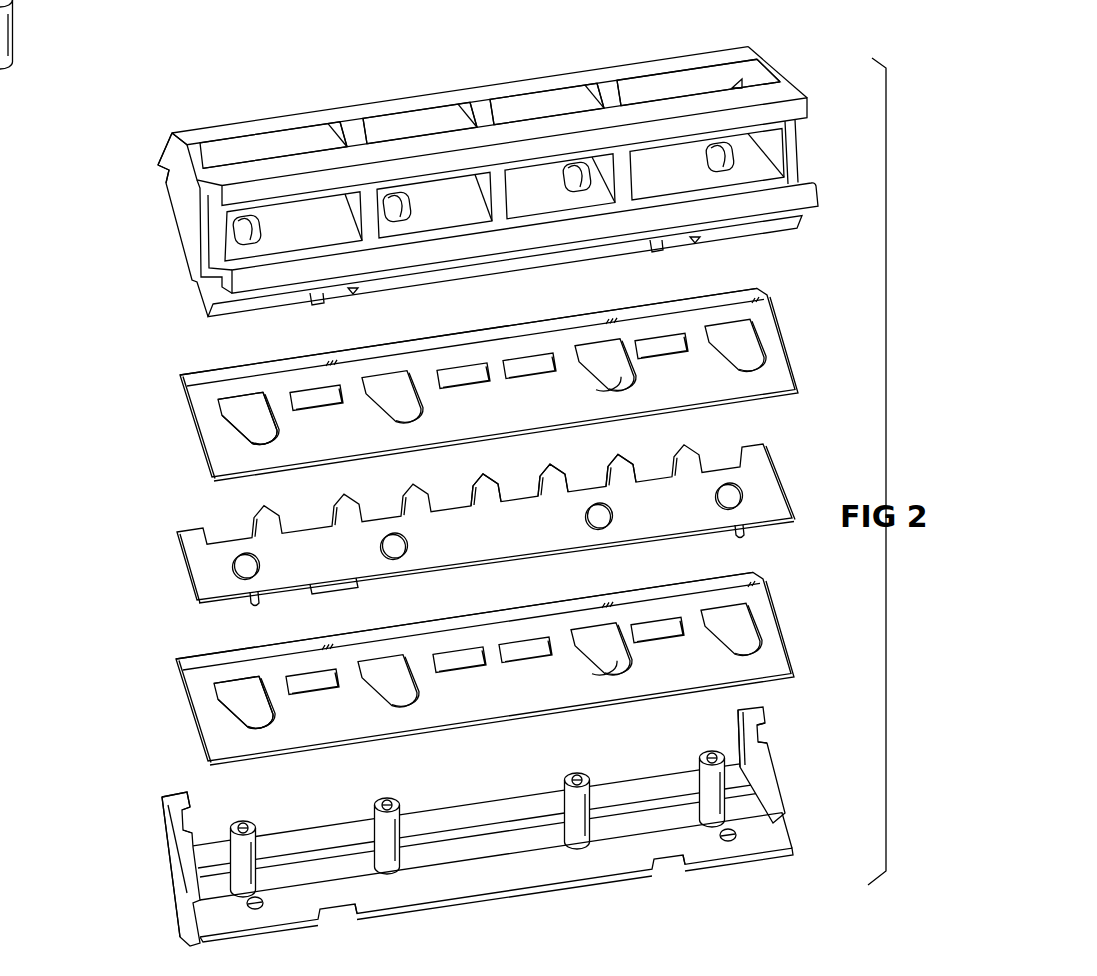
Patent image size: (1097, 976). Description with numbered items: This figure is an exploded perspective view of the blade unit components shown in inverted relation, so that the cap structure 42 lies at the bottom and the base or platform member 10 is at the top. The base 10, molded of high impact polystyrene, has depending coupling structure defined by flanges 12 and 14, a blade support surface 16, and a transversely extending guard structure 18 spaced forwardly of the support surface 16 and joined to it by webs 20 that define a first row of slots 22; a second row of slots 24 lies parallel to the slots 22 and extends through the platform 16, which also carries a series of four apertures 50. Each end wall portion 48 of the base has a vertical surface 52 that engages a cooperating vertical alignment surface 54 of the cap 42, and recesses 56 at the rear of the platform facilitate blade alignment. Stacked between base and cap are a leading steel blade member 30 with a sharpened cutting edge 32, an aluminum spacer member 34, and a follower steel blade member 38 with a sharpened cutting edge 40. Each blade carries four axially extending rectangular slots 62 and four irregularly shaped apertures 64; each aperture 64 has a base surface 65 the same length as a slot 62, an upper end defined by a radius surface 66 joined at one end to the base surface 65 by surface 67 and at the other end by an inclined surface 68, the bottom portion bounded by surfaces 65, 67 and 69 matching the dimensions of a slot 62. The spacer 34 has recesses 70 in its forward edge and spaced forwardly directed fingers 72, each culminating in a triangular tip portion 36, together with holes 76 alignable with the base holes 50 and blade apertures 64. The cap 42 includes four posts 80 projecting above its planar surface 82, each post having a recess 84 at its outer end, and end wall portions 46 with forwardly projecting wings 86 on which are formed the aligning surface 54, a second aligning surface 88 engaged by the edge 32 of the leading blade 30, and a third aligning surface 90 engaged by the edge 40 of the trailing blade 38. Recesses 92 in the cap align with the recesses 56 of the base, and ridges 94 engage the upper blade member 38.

The base or platform member 10 is at (481, 169).
The flange 12 is at (810, 101).
The flange 14 is at (817, 192).
The blade support surface 16 is at (184, 245).
The guard structure 18 is at (498, 82).
The web 20 is at (351, 120).
The slot 22 is at (258, 150).
The slot 24 is at (733, 133).
The leading steel blade member 30 is at (521, 370).
The cutting edge 32 is at (728, 290).
The spacer member 34 is at (506, 511).
The triangular projection 36 is at (620, 452).
The follower steel blade member 38 is at (504, 660).
The cutting edge 40 is at (728, 573).
The cap structure 42 is at (430, 485).
The end wall portion 46 is at (172, 888).
The end wall portion 48 is at (163, 148).
The aperture 50 is at (260, 233).
The vertical surface 52 is at (165, 177).
The vertical alignment surface 54 is at (169, 792).
The recess 56 is at (318, 302).
The rectangular slot 62 is at (310, 388).
The irregularly shaped aperture 64 is at (230, 422).
The base surface 65 is at (240, 397).
The radius surface 66 is at (273, 442).
The surface 67 is at (276, 424).
The inclined surface 68 is at (247, 440).
The surface 69 is at (217, 410).
The recess 70 is at (528, 495).
The finger 72 is at (487, 483).
The hole 76 is at (257, 567).
The post 80 is at (248, 822).
The planar surface 82 is at (455, 831).
The recess 84 is at (251, 828).
The wing 86 is at (160, 823).
The second aligning surface 88 is at (186, 802).
The third aligning surface 90 is at (186, 830).
The recess 92 is at (334, 920).
The ridge 94 is at (249, 918).